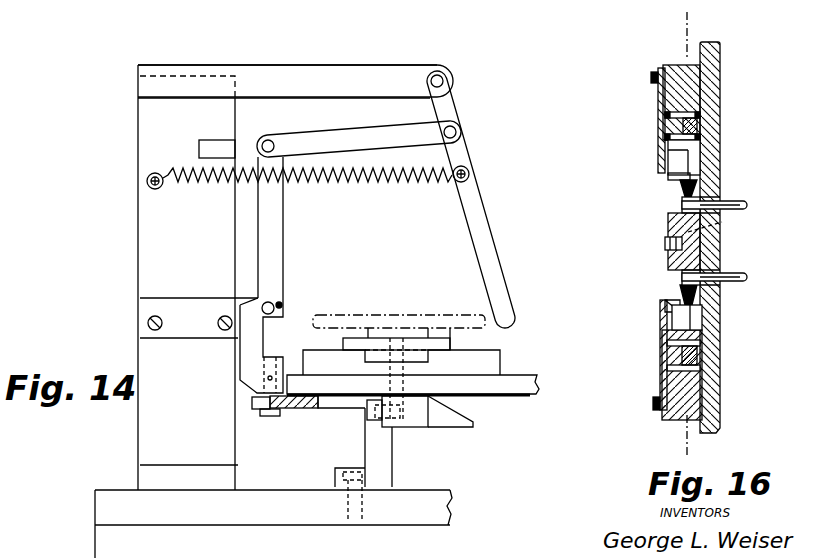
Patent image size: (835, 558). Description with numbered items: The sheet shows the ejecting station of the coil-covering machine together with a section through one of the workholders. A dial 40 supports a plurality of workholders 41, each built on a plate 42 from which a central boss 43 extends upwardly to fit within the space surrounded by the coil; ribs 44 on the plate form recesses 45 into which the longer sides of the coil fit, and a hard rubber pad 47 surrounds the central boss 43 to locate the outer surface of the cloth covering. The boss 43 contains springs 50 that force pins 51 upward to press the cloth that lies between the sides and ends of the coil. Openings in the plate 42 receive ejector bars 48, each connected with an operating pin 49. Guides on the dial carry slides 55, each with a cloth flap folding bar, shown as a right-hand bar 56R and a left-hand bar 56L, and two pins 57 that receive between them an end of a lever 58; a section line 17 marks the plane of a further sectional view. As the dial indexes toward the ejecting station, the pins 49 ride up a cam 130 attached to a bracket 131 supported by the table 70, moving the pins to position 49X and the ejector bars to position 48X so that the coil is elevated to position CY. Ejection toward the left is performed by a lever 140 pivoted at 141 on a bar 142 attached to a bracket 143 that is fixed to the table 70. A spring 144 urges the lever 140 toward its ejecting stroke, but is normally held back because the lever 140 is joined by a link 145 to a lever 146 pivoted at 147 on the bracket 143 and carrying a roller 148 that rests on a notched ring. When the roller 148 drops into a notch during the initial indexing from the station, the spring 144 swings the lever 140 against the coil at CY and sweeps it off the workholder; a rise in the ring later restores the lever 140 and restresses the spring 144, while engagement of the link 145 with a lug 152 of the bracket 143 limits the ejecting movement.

In FIG. 14, the bracket 143 is at (138, 130).
In FIG. 14, the lug 152 is at (211, 140).
In FIG. 14, the bar 142 is at (334, 66).
In FIG. 14, the pivot 141 is at (442, 80).
In FIG. 14, the lever 140 is at (490, 250).
In FIG. 14, the link 145 is at (355, 115).
In FIG. 14, the spring 144 is at (365, 180).
In FIG. 14, the lever 146 is at (278, 252).
In FIG. 14, the pivot 147 is at (282, 290).
In FIG. 14, the roller 148 is at (252, 402).
In FIG. 14, the table 70 is at (432, 490).
In FIG. 14, the dial 40 is at (532, 395).
In FIG. 16, the dial 40 is at (715, 62).
In FIG. 14, the workholder 41 is at (545, 359).
In FIG. 14, the pad 47 is at (502, 348).
In FIG. 16, the pad 47 is at (672, 190).
In FIG. 14, the ribs 44 is at (418, 338).
In FIG. 16, the ribs 44 is at (705, 322).
In FIG. 14, the elevated coil position CY is at (398, 312).
In FIG. 14, the raised position of ejector bars 48X is at (450, 333).
In FIG. 14, the raised position of operating pins 49X is at (388, 360).
In FIG. 14, the cam 130 is at (475, 415).
In FIG. 14, the bracket 131 is at (394, 455).
In FIG. 16, the section line 17 is at (678, 31).
In FIG. 16, the slide 55 is at (688, 62).
In FIG. 16, the cloth flap folding bar 56R is at (660, 115).
In FIG. 16, the cloth flap folding bar 56L is at (660, 362).
In FIG. 16, the pins 57 is at (700, 115).
In FIG. 16, the lever 58 is at (690, 125).
In FIG. 16, the plate 42 is at (700, 162).
In FIG. 16, the ejector bars 48 is at (705, 185).
In FIG. 16, the recesses 45 is at (682, 205).
In FIG. 16, the operating pin 49 is at (745, 204).
In FIG. 16, the central boss 43 is at (668, 222).
In FIG. 16, the springs 50 is at (722, 223).
In FIG. 16, the pins 51 is at (665, 245).